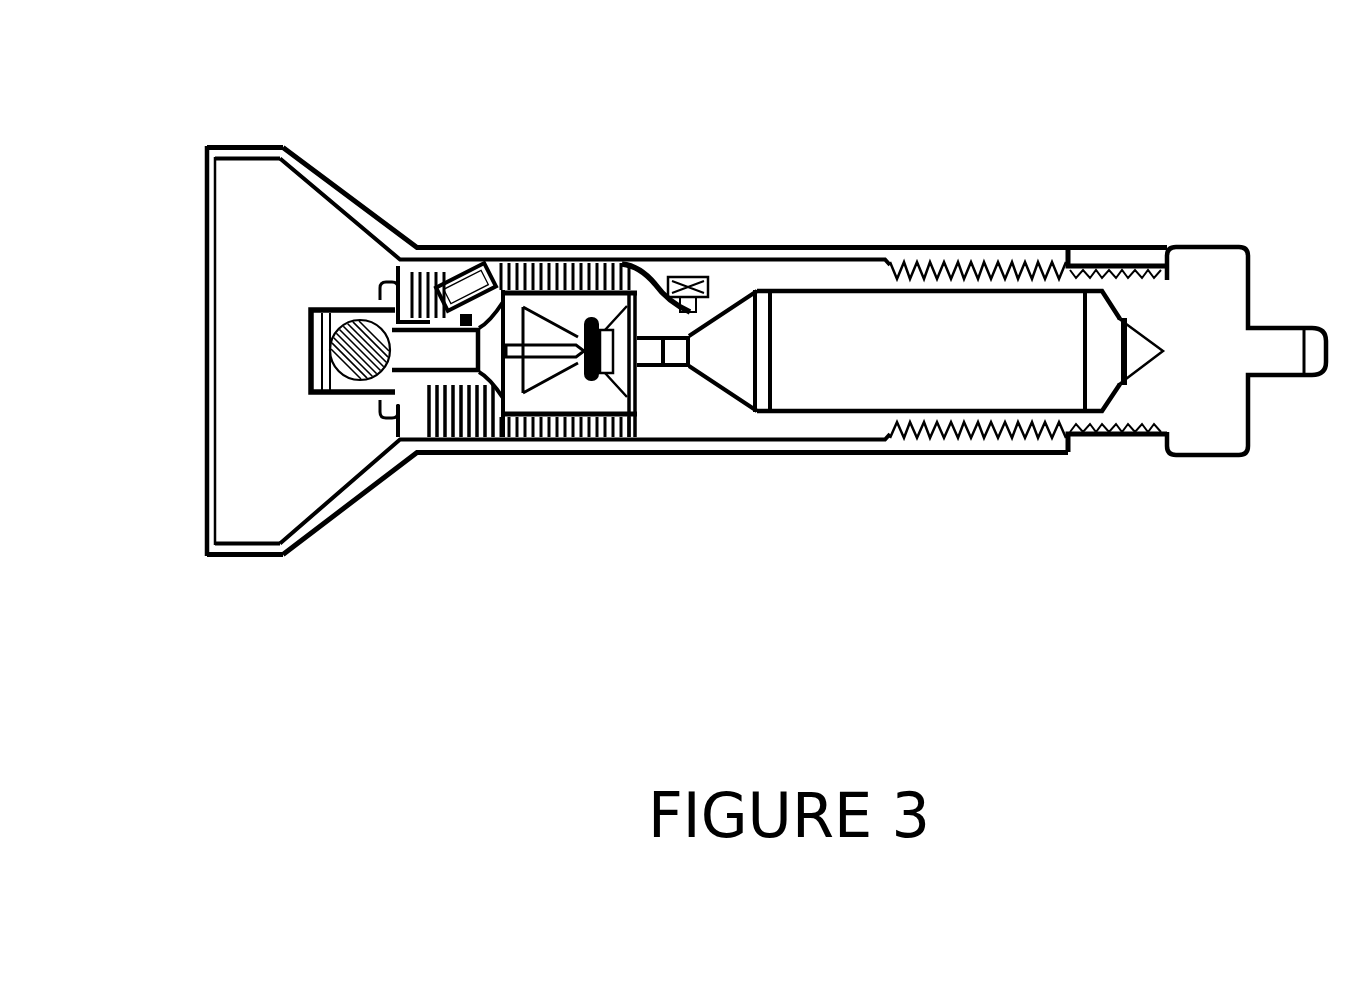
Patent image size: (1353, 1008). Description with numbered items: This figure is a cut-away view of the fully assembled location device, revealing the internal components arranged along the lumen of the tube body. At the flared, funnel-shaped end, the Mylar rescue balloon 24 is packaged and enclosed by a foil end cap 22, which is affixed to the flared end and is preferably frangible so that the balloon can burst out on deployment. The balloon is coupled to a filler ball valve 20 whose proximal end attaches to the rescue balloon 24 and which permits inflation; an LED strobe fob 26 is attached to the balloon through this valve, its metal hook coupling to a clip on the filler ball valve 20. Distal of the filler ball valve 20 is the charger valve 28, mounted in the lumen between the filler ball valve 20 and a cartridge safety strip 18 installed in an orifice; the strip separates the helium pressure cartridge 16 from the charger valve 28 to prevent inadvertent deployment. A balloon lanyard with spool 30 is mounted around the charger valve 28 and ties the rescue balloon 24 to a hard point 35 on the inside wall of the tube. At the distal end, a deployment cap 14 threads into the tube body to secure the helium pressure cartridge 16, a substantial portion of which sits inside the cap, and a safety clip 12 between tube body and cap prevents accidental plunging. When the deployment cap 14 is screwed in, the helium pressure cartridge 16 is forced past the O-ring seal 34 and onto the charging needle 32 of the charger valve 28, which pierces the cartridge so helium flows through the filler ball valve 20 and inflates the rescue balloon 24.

The safety clip 12 is at (1092, 233).
The deployment cap 14 is at (1207, 268).
The helium pressure cartridge 16 is at (856, 320).
The cartridge safety strip 18 is at (649, 426).
The filler ball valve 20 is at (343, 295).
The foil end cap 22 is at (194, 264).
The Mylar rescue balloon 24 is at (246, 378).
The LED strobe fob 26 is at (453, 292).
The charger valve 28 is at (556, 305).
The balloon lanyard with spool 30 is at (649, 275).
The charging needle 32 is at (515, 369).
The O-ring seal 34 is at (583, 404).
The hard point 35 is at (687, 268).